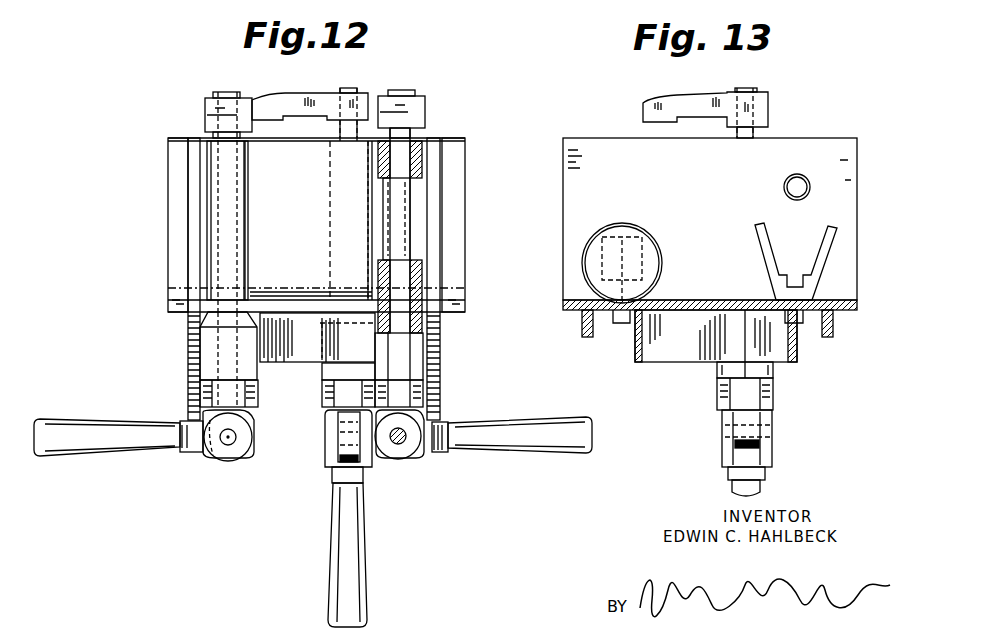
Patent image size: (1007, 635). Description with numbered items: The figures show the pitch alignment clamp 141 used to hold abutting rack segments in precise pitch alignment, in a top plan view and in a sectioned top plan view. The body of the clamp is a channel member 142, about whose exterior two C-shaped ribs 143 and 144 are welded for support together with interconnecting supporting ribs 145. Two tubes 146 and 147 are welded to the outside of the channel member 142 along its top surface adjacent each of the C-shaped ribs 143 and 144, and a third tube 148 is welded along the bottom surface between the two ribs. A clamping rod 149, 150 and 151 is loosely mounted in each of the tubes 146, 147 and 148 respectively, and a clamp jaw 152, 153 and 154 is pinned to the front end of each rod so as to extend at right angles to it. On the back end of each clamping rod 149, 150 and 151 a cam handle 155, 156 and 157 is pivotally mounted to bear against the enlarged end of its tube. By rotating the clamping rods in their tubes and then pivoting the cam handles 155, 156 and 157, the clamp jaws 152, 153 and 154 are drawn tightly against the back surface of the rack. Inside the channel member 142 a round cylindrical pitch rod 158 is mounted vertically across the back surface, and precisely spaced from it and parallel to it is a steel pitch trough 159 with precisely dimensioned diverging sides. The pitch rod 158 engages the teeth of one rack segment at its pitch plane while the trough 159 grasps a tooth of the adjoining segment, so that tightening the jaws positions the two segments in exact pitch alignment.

In FIG. 12, the alignment clamp 141 is at (170, 172).
In FIG. 13, the alignment clamp 141 is at (818, 138).
In FIG. 12, the channel member 142 is at (305, 239).
In FIG. 13, the channel member 142 is at (683, 182).
In FIG. 12, the C-shaped rib 143 is at (192, 348).
In FIG. 13, the C-shaped rib 143 is at (582, 336).
In FIG. 12, the C-shaped rib 144 is at (442, 258).
In FIG. 13, the C-shaped rib 144 is at (833, 331).
In FIG. 12, the supporting ribs 145 is at (291, 352).
In FIG. 13, the supporting ribs 145 is at (750, 336).
In FIG. 12, the tube 146 is at (218, 207).
In FIG. 12, the tube 147 is at (410, 210).
In FIG. 12, the tube 148 is at (330, 181).
In FIG. 13, the tube 148 is at (775, 370).
In FIG. 12, the clamping rod 149 is at (212, 133).
In FIG. 12, the clamping rod 150 is at (428, 131).
In FIG. 12, the clamping rod 151 is at (337, 130).
In FIG. 13, the clamping rod 151 is at (760, 131).
In FIG. 12, the clamp jaw 152 is at (215, 98).
In FIG. 12, the clamp jaw 153 is at (425, 98).
In FIG. 12, the clamp jaw 154 is at (308, 93).
In FIG. 13, the clamp jaw 154 is at (672, 95).
In FIG. 12, the cam handle 155 is at (93, 458).
In FIG. 12, the cam handle 156 is at (540, 455).
In FIG. 12, the cam handle 157 is at (343, 588).
In FIG. 13, the cam handle 157 is at (761, 490).
In FIG. 13, the pitch rod 158 is at (640, 200).
In FIG. 13, the pitch trough 159 is at (840, 230).